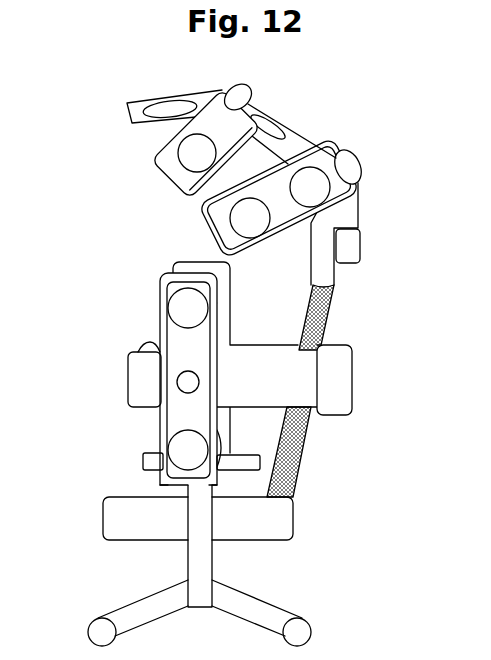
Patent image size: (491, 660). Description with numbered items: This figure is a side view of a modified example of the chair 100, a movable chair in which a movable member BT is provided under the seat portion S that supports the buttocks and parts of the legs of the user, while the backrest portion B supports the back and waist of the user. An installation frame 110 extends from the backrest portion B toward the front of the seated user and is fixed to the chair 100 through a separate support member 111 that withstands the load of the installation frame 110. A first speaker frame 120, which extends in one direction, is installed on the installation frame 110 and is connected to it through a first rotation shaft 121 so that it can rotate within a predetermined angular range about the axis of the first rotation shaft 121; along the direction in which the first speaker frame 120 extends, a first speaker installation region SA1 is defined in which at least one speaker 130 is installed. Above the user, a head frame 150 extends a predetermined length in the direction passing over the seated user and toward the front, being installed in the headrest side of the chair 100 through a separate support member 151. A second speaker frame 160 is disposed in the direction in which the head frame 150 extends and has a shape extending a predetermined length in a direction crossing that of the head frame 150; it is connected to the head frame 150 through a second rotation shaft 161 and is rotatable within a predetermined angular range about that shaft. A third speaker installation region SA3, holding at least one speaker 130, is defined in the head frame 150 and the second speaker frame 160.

The chair 100 is at (458, 101).
The installation frame 110 is at (127, 378).
The support member 111 is at (342, 398).
The first speaker frame 120 is at (162, 486).
The first rotation shaft 121 is at (185, 378).
The speaker 130 is at (185, 152).
The head frame 150 is at (130, 122).
The support member 151 is at (350, 253).
The second speaker frame 160 is at (352, 188).
The second rotation shaft 161 is at (244, 93).
The first speaker installation region SA1 is at (165, 433).
The third speaker installation region SA3 is at (210, 226).
The backrest portion B is at (305, 440).
The seat portion S is at (290, 520).
The movable member BT is at (197, 578).